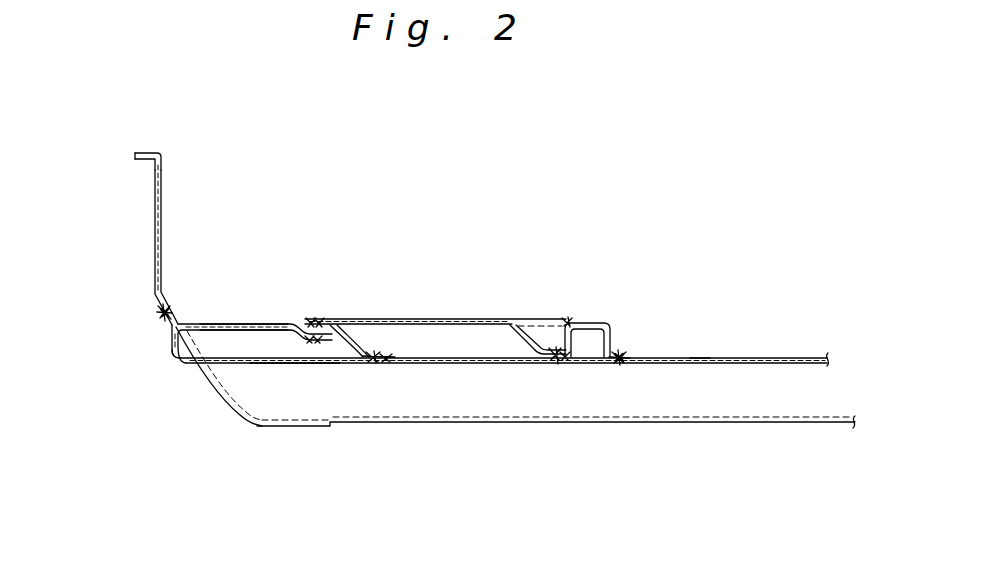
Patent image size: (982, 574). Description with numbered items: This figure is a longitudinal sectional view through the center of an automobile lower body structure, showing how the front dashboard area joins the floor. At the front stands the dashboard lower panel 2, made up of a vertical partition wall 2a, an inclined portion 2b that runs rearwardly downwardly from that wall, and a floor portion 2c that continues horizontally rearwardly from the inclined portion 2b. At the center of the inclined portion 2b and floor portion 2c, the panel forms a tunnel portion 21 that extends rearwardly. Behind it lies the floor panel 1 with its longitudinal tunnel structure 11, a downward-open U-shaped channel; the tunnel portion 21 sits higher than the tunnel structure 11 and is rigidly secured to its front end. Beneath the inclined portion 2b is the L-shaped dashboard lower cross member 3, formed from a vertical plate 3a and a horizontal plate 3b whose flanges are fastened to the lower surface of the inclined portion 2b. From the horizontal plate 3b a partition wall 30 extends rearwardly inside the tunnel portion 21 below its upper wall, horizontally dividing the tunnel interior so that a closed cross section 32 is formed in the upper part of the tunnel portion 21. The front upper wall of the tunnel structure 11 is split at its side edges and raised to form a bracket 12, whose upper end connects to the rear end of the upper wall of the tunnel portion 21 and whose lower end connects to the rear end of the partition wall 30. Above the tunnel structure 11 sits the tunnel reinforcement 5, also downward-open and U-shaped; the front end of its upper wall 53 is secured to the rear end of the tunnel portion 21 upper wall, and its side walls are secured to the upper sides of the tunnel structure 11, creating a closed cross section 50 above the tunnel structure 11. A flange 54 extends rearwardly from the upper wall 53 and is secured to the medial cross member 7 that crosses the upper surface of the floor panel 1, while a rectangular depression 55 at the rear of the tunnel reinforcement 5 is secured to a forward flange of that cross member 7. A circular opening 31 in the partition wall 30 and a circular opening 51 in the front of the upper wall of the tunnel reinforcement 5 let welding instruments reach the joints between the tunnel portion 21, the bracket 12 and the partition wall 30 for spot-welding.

The floor panel 1 is at (505, 315).
The tunnel structure 11 is at (696, 356).
The bracket 12 is at (358, 355).
The dashboard lower panel 2 is at (110, 239).
The vertical partition wall 2a is at (151, 198).
The inclined portion 2b is at (226, 393).
The floor portion 2c is at (288, 428).
The dashboard lower cross member 3 is at (193, 368).
The vertical plate 3a is at (164, 333).
The horizontal plate 3b is at (192, 365).
The partition wall 30 is at (209, 380).
The circular opening 31 is at (316, 364).
The closed cross section 32 is at (235, 347).
The tunnel portion 21 is at (273, 350).
The tunnel reinforcement 5 is at (474, 290).
The circular opening 51 is at (384, 318).
The upper wall 53 is at (318, 317).
The rectangular depression 55 is at (545, 320).
The flange 54 is at (580, 320).
The medial cross member 7 is at (607, 321).
The closed cross section 50 is at (483, 344).